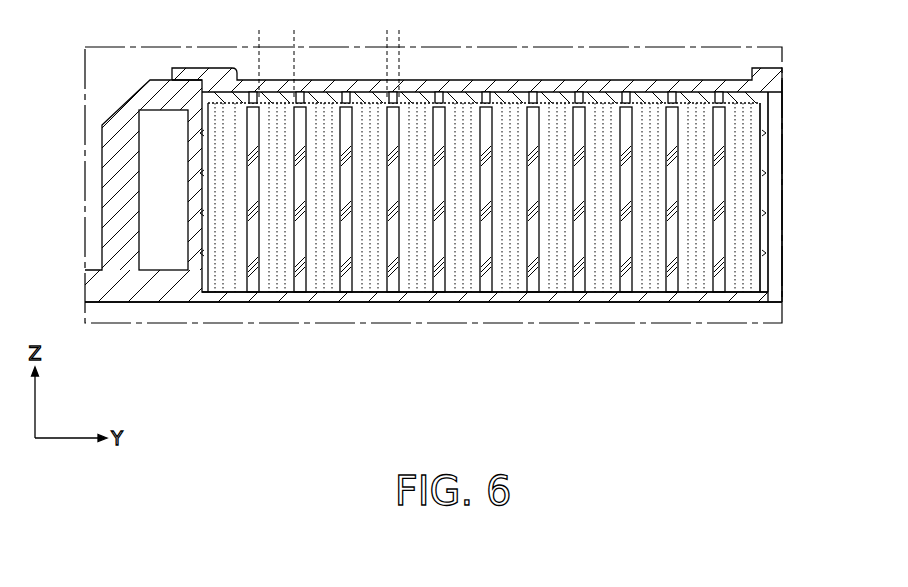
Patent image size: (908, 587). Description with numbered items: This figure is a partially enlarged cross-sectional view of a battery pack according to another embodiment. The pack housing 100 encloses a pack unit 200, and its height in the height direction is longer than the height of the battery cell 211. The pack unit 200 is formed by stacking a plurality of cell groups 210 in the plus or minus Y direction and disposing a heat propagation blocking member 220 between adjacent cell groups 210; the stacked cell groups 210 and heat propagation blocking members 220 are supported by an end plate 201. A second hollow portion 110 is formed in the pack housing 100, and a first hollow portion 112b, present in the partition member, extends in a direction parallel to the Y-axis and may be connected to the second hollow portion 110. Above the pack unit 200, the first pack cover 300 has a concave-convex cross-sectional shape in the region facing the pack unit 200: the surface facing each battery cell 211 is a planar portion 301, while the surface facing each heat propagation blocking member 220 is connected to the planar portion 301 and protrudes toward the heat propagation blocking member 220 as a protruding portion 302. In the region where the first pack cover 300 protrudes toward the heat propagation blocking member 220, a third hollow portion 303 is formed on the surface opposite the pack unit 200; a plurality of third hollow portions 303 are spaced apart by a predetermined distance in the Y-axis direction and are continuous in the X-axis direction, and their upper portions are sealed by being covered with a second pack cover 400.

The pack housing 100 is at (116, 208).
The second hollow portion 110 is at (165, 176).
The first hollow portion 112b is at (775, 244).
The pack unit 200 is at (203, 330).
The end plate 201 is at (765, 146).
The cell group 210 is at (224, 290).
The battery cell 211 is at (757, 180).
The heat propagation blocking member 220 is at (718, 217).
The first pack cover 300 is at (642, 88).
The planar portion 301 is at (222, 35).
The protruding portion 302 is at (352, 35).
The third hollow portion 303 is at (484, 97).
The second pack cover 400 is at (555, 92).